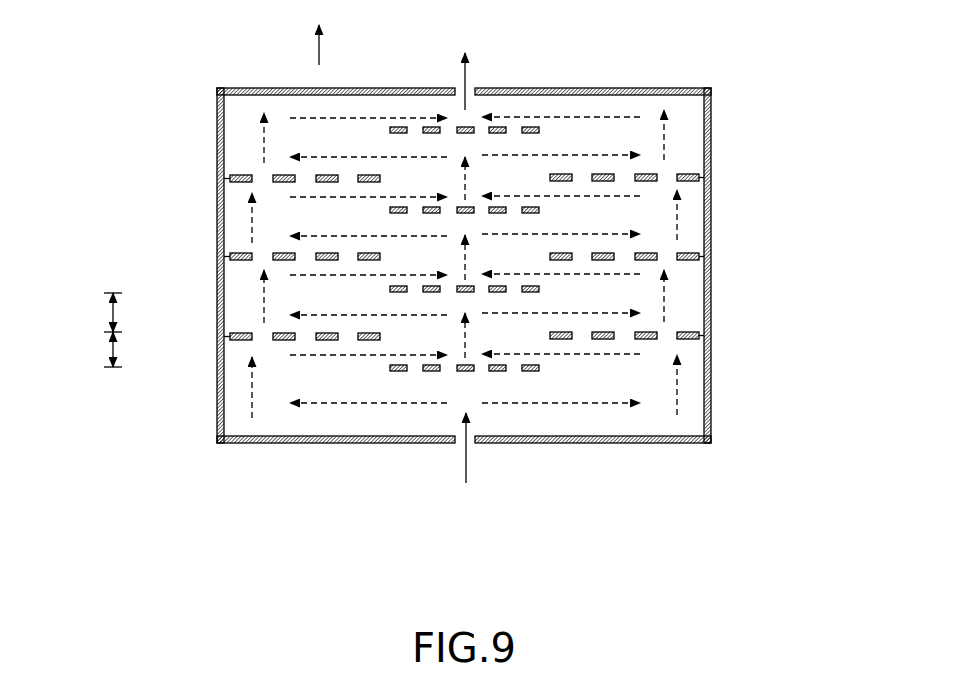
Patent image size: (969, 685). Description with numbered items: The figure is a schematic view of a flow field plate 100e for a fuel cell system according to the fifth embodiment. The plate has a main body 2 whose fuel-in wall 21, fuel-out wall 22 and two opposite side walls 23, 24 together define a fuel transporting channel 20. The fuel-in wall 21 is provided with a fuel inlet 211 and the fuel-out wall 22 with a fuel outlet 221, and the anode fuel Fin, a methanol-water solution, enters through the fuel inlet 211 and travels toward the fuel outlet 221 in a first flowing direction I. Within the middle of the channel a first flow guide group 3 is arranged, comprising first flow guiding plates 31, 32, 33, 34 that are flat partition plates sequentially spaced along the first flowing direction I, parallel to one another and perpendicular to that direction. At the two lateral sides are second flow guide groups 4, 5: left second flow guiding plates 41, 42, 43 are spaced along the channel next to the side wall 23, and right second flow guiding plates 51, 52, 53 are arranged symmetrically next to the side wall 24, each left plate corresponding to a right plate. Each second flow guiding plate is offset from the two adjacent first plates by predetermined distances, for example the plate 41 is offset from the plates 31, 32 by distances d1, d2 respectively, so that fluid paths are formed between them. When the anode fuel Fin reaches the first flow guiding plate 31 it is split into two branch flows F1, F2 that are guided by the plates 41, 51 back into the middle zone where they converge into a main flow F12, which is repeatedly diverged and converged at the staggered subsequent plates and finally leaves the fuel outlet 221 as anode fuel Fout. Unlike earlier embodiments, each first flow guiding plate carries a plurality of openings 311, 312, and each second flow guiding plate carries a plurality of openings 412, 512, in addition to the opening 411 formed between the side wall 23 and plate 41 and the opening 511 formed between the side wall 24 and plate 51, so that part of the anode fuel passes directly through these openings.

The flow field plate 100e is at (684, 86).
The main body 2 is at (711, 100).
The fuel transporting channel 20 is at (543, 110).
The fuel-in wall 21 is at (618, 444).
The fuel inlet 211 is at (472, 444).
The fuel-out wall 22 is at (610, 88).
The fuel outlet 221 is at (470, 93).
The side wall 23 is at (217, 130).
The side wall 24 is at (711, 158).
The first flow guide group 3 is at (448, 368).
The first flow guiding plate 31 is at (540, 369).
The opening 311 is at (431, 375).
The opening 312 is at (417, 368).
The first flow guiding plate 32 is at (540, 289).
The first flow guiding plate 33 is at (540, 210).
The first flow guiding plate 34 is at (540, 130).
The second flow guide group 4 is at (243, 343).
The left second flow guiding plate 41 is at (223, 343).
The opening 411 is at (229, 334).
The opening 412 is at (268, 345).
The left second flow guiding plate 42 is at (217, 258).
The left second flow guiding plate 43 is at (217, 178).
The second flow guide group 5 is at (688, 342).
The right second flow guiding plate 51 is at (695, 333).
The opening 511 is at (702, 338).
The opening 512 is at (670, 332).
The right second flow guiding plate 52 is at (711, 262).
The right second flow guiding plate 53 is at (711, 182).
The branch flow F1 is at (333, 405).
The branch flow F2 is at (555, 405).
The main flow F12 is at (468, 333).
The anode fuel Fin is at (468, 462).
The anode fuel Fout is at (460, 83).
The first flowing direction I is at (318, 52).
The distance d1 is at (101, 349).
The distance d2 is at (101, 312).